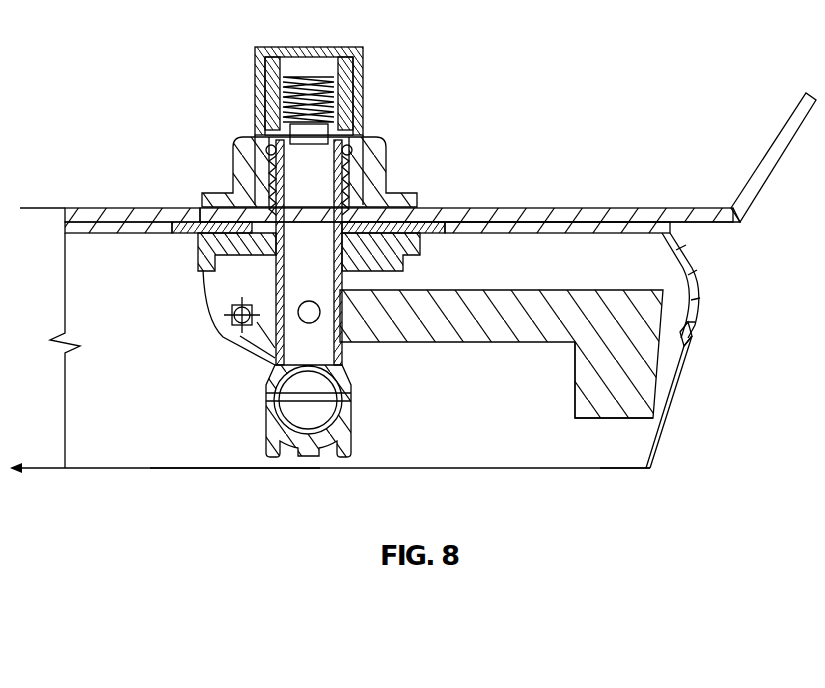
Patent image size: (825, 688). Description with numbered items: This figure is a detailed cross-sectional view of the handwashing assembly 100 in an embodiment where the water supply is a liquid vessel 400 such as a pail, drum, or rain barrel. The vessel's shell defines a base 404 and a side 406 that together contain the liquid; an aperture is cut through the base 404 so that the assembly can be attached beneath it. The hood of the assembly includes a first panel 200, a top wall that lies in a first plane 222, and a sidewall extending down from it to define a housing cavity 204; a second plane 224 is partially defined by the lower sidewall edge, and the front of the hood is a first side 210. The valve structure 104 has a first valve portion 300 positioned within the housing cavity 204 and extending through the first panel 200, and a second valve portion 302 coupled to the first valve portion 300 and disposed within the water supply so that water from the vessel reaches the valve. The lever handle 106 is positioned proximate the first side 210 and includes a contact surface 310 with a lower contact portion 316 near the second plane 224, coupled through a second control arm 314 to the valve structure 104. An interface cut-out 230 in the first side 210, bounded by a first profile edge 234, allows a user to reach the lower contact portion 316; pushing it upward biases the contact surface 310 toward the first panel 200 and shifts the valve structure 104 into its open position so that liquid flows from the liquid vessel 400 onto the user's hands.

The valve structure 104 is at (250, 96).
The second valve portion 302 is at (390, 165).
The liquid vessel 400 is at (511, 158).
The base 404 is at (610, 208).
The side 406 is at (771, 150).
The first plane 222 is at (62, 209).
The first panel 200 is at (158, 210).
The handwashing assembly 100 is at (699, 249).
The first valve portion 300 is at (425, 248).
The first side 210 is at (704, 292).
The contact surface 310 is at (690, 330).
The interface cut-out 230 is at (698, 338).
The first profile edge 234 is at (690, 350).
The second control arm 314 is at (445, 332).
The lower contact portion 316 is at (605, 420).
The second plane 224 is at (30, 466).
The housing cavity 204 is at (228, 448).
The lever handle 106 is at (633, 446).